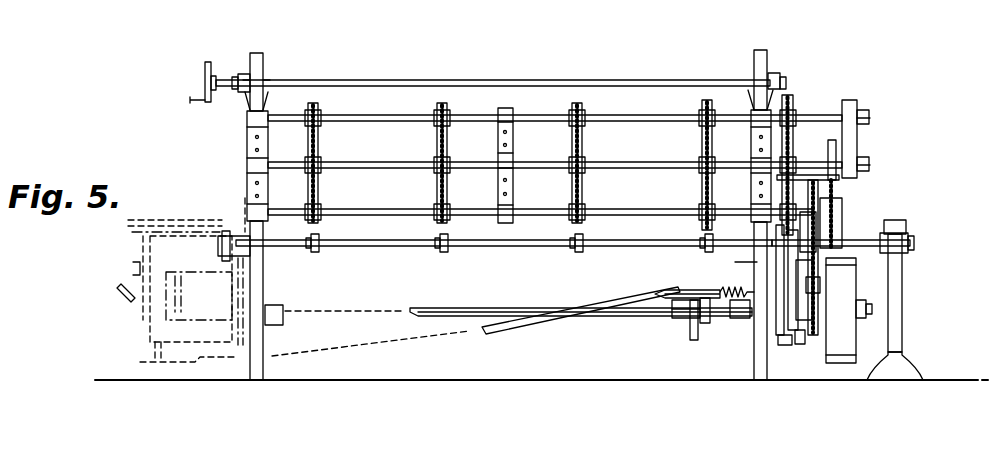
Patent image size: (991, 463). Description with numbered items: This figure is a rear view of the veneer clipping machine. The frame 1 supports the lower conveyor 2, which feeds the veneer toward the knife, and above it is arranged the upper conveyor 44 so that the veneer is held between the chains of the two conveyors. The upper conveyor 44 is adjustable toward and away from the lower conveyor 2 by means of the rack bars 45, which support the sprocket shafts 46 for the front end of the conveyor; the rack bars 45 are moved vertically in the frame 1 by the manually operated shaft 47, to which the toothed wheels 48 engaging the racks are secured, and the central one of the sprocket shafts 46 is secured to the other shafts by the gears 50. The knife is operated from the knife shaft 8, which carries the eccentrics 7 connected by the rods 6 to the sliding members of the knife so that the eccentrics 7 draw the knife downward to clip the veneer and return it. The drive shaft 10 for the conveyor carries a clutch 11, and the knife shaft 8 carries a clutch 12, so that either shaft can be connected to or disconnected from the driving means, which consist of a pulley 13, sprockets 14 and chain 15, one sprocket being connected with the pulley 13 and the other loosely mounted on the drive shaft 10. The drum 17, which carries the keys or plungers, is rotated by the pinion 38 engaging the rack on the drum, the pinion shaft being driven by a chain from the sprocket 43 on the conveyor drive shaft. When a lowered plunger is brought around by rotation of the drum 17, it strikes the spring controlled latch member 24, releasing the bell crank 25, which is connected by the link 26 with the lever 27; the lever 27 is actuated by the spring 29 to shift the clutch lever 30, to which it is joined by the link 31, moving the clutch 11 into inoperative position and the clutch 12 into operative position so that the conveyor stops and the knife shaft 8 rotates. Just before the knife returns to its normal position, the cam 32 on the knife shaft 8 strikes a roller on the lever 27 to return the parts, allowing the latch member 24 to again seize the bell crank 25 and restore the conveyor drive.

The frame 1 is at (267, 285).
The lower conveyor 2 is at (580, 232).
The rods 6 is at (250, 273).
The eccentrics 7 is at (762, 350).
The knife shaft 8 is at (477, 317).
The drive shaft 10 is at (603, 250).
The clutch 11 is at (815, 232).
The clutch 12 is at (858, 350).
The pulley 13 is at (177, 11).
The sprockets 14 is at (937, 318).
The chain 15 is at (857, 265).
The drum 17 is at (125, 225).
The latch member 24 is at (135, 253).
The bell crank 25 is at (122, 305).
The link 26 is at (452, 337).
The lever 27 is at (710, 288).
The spring 29 is at (728, 293).
The clutch lever 30 is at (783, 336).
The link 31 is at (858, 310).
The cam 32 is at (702, 305).
The pinion 38 is at (223, 267).
The sprocket 43 is at (232, 232).
The upper conveyor 44 is at (437, 137).
The rack bars 45 is at (258, 54).
The sprocket shafts 46 is at (405, 165).
The manually operated shaft 47 is at (227, 78).
The toothed wheels 48 is at (270, 78).
The gears 50 is at (828, 150).